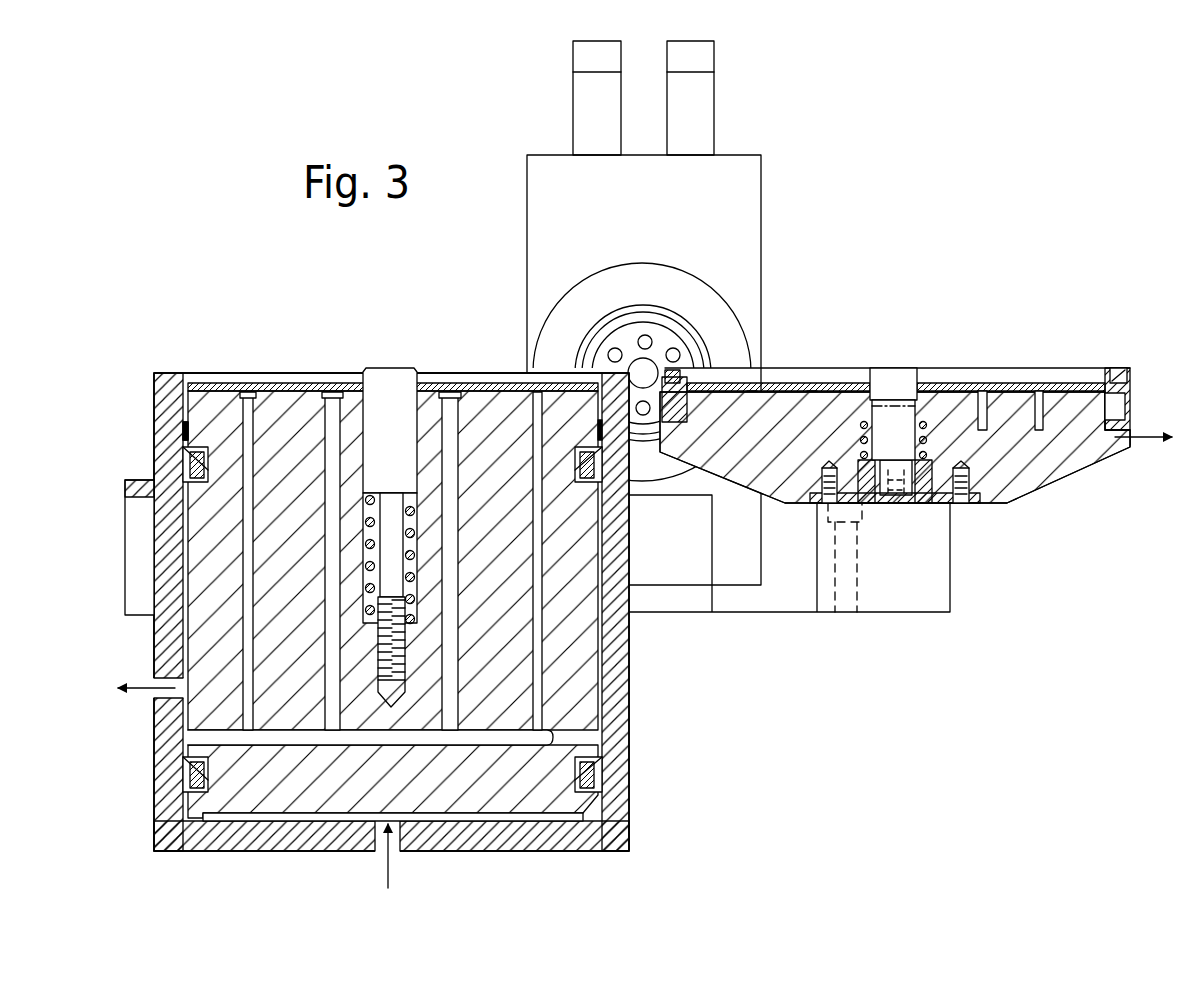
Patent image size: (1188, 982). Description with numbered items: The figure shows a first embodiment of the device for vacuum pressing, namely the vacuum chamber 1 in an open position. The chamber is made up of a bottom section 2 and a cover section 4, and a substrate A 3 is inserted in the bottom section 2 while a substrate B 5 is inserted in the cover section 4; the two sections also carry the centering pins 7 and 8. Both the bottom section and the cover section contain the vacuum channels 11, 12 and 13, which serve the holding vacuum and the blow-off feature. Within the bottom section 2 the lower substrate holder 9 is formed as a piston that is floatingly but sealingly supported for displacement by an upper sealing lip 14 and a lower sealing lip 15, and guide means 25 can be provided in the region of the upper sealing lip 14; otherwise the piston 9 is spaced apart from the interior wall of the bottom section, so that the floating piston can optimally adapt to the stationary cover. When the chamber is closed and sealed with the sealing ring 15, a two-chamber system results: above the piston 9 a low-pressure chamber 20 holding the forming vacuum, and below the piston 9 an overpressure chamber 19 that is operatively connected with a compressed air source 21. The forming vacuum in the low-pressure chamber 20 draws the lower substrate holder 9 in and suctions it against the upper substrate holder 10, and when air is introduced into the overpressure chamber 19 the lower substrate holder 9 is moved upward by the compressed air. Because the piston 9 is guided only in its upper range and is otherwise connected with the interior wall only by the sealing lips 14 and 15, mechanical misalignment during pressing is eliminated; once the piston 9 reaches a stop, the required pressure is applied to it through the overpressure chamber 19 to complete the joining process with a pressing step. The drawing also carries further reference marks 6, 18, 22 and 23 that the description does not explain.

The vacuum chamber 1 is at (488, 290).
The bottom section 2 is at (549, 830).
The substrate A 3 is at (289, 390).
The cover section 4 is at (1031, 470).
The substrate B 5 is at (955, 385).
The rotary feedthrough 6 is at (655, 345).
The centering pin 7 is at (393, 380).
The centering pin 8 is at (894, 390).
The lower substrate holder 9 is at (580, 692).
The upper substrate holder 10 is at (1018, 400).
The vacuum channel 11 is at (488, 742).
The vacuum channel 12 is at (330, 405).
The vacuum channel 13 is at (248, 398).
The upper sealing lip 14 is at (190, 462).
The lower sealing lip 15 is at (190, 772).
The closure 18 is at (1115, 380).
The overpressure chamber 19 is at (246, 816).
The low-pressure chamber 20 is at (198, 383).
The compressed air source 21 is at (384, 876).
The outlet 22 is at (146, 692).
The outlet 23 is at (1142, 440).
The guide means 25 is at (183, 430).